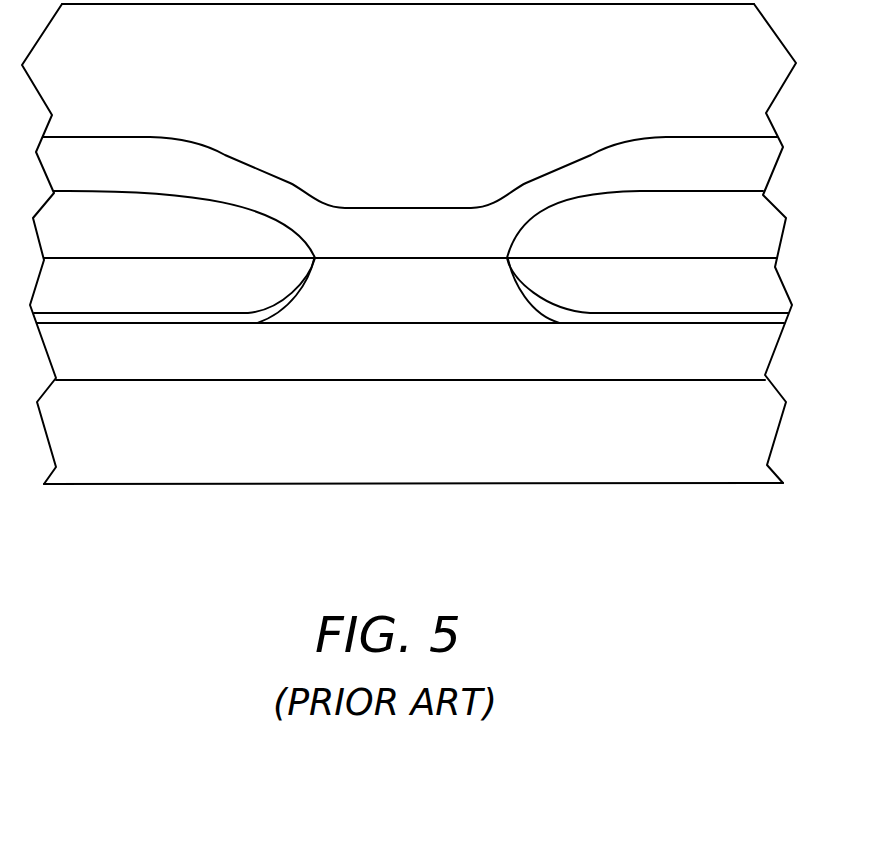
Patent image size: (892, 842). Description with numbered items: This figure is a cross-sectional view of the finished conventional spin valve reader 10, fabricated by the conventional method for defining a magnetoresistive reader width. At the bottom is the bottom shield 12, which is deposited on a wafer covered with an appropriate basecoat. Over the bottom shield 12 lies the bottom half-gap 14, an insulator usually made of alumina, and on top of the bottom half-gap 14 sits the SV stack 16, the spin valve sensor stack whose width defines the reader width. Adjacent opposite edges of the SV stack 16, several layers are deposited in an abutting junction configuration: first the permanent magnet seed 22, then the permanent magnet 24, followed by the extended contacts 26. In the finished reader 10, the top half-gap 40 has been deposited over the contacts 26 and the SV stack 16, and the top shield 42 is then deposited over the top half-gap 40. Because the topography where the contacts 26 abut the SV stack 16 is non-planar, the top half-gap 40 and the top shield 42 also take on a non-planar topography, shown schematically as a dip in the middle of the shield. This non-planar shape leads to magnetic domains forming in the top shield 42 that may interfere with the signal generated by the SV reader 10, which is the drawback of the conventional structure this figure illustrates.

The MR reader 10 is at (233, 542).
The bottom shield 12 is at (396, 435).
The bottom half-gap 14 is at (396, 362).
The SV stack 16 is at (396, 305).
The permanent magnet seed 22 is at (260, 320).
The permanent magnet 24 is at (217, 297).
The extended contacts 26 is at (184, 239).
The top half-gap 40 is at (396, 246).
The top shield 42 is at (396, 102).